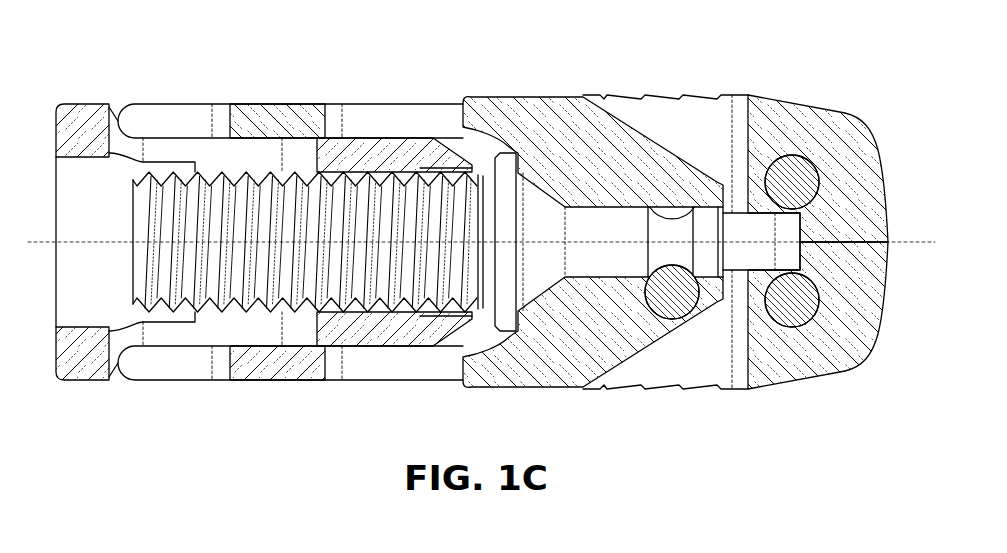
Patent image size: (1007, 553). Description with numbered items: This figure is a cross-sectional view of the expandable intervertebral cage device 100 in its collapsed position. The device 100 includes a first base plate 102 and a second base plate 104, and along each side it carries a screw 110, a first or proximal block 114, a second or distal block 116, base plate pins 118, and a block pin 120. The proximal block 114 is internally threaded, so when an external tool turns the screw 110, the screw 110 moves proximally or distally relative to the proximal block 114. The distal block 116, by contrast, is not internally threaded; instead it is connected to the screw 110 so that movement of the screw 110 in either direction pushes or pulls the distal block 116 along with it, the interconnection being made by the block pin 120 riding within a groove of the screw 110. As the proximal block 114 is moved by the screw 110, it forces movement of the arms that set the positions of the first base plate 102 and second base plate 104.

The intervertebral cage device 100 is at (897, 83).
The first base plate 102 is at (413, 98).
The second base plate 104 is at (355, 368).
The screw 110 is at (211, 300).
The proximal block 114 is at (96, 104).
The distal block 116 is at (545, 96).
The base plate pins 118 is at (790, 315).
The block pin 120 is at (672, 300).